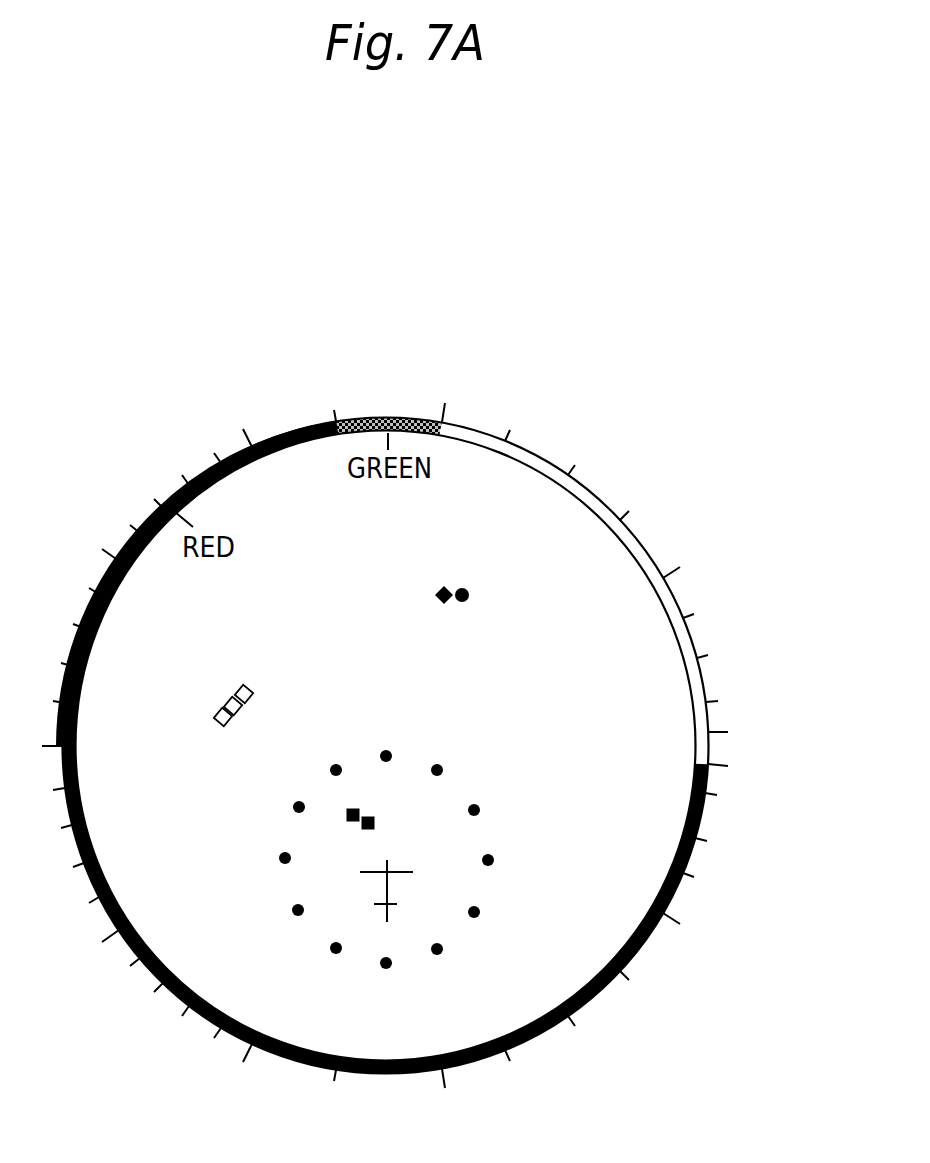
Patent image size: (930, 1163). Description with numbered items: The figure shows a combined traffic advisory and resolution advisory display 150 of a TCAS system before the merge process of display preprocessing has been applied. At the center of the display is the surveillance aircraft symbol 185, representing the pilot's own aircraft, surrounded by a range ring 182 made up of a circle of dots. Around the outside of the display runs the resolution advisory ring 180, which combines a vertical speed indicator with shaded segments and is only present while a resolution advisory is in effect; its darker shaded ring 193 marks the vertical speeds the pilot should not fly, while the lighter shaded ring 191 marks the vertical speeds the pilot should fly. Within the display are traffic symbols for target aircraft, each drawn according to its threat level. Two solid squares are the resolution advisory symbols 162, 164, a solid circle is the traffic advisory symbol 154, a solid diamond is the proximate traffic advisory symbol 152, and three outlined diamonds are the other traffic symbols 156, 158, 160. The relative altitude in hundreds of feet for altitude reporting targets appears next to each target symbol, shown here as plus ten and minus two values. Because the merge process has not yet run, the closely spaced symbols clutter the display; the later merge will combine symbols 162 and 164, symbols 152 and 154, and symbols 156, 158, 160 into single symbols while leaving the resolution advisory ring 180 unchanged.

The combined TA and RA display 150 is at (642, 1037).
The proximate traffic advisory symbol 152 is at (437, 595).
The traffic advisory symbol 154 is at (463, 602).
The other traffic symbol 156 is at (215, 716).
The other traffic symbol 158 is at (240, 715).
The other traffic symbol 160 is at (247, 683).
The resolution advisory symbol 162 is at (362, 812).
The resolution advisory symbol 164 is at (374, 820).
The resolution advisory ring 180 is at (100, 898).
The range ring 182 is at (291, 912).
The surveillance aircraft symbol 185 is at (389, 878).
The lighter shaded ring 191 is at (370, 417).
The darker shaded ring 193 is at (232, 452).